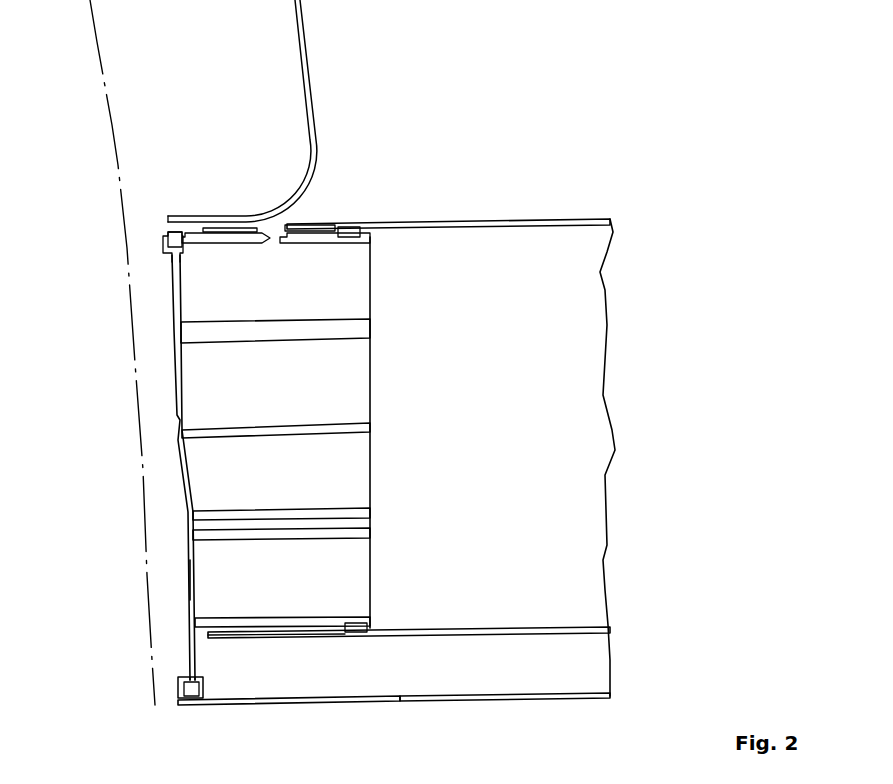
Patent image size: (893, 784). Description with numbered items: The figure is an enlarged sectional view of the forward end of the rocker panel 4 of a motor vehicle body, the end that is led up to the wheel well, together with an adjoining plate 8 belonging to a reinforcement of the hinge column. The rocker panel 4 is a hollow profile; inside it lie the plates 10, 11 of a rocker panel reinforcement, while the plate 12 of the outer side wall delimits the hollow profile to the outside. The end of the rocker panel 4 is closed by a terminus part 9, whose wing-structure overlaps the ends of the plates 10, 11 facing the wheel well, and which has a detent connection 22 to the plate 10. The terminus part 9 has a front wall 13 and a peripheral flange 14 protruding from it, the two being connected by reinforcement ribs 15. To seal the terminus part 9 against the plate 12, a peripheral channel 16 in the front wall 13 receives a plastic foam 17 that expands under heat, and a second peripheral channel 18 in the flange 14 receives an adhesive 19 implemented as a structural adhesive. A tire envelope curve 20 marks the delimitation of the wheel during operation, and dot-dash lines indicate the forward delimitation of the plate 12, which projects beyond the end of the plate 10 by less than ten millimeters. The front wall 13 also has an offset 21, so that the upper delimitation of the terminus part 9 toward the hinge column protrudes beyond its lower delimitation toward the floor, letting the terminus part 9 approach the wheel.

The rocker panel 4 is at (494, 709).
The adjoining plate 8 is at (310, 65).
The terminus part 9 is at (169, 518).
The plate of the rocker panel reinforcement 10 is at (565, 223).
The plate of the rocker panel reinforcement 11 is at (538, 628).
The plate of the outer side wall 12 is at (260, 700).
The front wall 13 is at (187, 570).
The peripheral flange 14 is at (225, 585).
The reinforcement ribs 15 is at (295, 537).
The peripheral channel 16 is at (163, 250).
The plastic foam 17 is at (170, 237).
The second peripheral channel 18 is at (378, 617).
The adhesive 19 is at (352, 632).
The tire envelope curve 20 is at (103, 87).
The offset 21 is at (177, 465).
The detent connection 22 is at (288, 212).